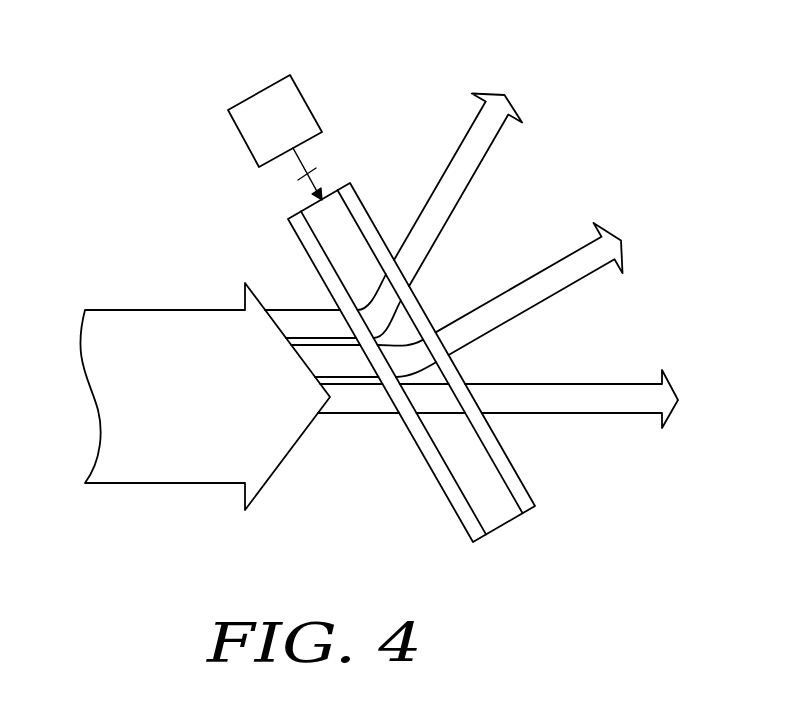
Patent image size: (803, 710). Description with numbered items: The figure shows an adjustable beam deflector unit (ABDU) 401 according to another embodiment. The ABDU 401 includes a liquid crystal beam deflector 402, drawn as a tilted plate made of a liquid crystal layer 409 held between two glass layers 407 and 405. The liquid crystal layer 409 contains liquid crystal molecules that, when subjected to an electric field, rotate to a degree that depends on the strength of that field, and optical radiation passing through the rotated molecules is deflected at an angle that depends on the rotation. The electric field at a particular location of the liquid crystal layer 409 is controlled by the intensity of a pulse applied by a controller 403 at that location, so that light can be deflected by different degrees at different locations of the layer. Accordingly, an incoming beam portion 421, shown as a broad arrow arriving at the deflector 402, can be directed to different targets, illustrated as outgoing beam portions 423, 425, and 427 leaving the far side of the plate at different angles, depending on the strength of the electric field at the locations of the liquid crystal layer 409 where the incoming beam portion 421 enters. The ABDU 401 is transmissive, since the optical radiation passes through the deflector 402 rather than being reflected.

The adjustable beam deflector unit 401 is at (572, 64).
The liquid crystal beam deflector 402 is at (533, 479).
The controller 403 is at (256, 133).
The glass layer 405 is at (527, 512).
The glass layer 407 is at (463, 518).
The liquid crystal layer 409 is at (500, 513).
The incoming beam portion 421 is at (208, 411).
The beam portion 423 is at (457, 152).
The beam portion 425 is at (546, 268).
The beam portion 427 is at (607, 384).